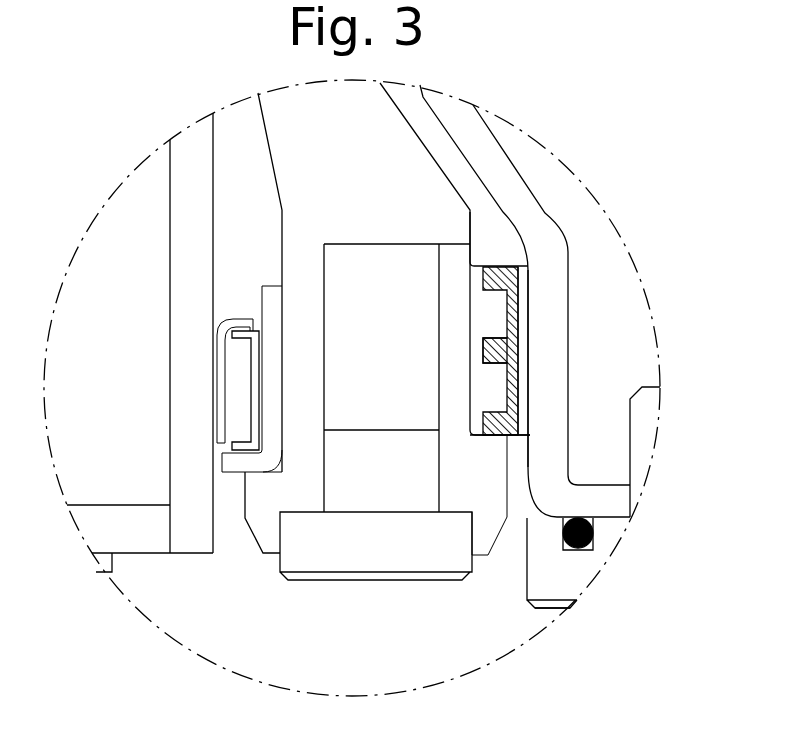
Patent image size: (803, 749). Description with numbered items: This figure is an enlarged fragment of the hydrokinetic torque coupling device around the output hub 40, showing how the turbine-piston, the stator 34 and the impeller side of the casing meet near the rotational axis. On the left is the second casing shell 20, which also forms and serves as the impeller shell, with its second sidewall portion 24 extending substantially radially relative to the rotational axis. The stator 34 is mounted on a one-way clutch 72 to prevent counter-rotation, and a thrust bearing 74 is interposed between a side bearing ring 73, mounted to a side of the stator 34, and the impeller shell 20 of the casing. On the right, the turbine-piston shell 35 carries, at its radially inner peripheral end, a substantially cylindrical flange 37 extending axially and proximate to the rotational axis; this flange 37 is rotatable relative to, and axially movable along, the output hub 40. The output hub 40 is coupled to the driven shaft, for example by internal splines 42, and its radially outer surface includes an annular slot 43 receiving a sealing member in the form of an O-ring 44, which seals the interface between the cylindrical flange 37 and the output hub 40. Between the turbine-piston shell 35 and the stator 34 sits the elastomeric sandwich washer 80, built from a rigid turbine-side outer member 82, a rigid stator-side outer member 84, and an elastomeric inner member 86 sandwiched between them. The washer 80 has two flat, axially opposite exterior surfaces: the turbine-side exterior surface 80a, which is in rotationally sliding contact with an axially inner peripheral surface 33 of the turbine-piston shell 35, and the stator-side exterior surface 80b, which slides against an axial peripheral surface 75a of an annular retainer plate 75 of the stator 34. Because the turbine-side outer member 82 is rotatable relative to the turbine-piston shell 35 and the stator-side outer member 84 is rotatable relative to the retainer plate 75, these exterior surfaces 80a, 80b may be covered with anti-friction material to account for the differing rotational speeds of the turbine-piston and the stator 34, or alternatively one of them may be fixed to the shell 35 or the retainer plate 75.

The second casing shell 20 is at (168, 227).
The second sidewall portion 24 is at (193, 350).
The axially inner peripheral surface 33 is at (528, 460).
The stator 34 is at (270, 171).
The turbine-piston shell 35 is at (483, 153).
The substantially cylindrical flange 37 is at (602, 500).
The output hub 40 is at (613, 596).
The internal splines 42 is at (550, 604).
The annular slot 43 is at (631, 557).
The O-ring 44 is at (578, 550).
The one-way clutch 72 is at (376, 412).
The side bearing ring 73 is at (268, 301).
The thrust bearing 74 is at (240, 396).
The annular retainer plate 75 is at (452, 259).
The axial peripheral surface 75a is at (470, 253).
The elastomeric sandwich washer 80 is at (498, 301).
The turbine-side exterior surface 80a is at (530, 340).
The stator-side exterior surface 80b is at (470, 402).
The turbine-side outer member 82 is at (523, 308).
The stator-side outer member 84 is at (487, 308).
The elastomeric inner member 86 is at (510, 350).